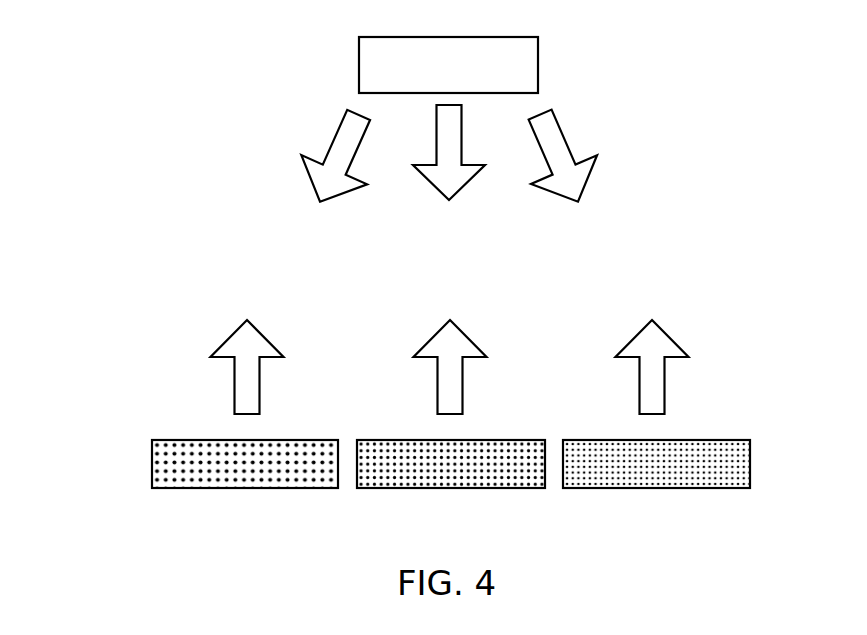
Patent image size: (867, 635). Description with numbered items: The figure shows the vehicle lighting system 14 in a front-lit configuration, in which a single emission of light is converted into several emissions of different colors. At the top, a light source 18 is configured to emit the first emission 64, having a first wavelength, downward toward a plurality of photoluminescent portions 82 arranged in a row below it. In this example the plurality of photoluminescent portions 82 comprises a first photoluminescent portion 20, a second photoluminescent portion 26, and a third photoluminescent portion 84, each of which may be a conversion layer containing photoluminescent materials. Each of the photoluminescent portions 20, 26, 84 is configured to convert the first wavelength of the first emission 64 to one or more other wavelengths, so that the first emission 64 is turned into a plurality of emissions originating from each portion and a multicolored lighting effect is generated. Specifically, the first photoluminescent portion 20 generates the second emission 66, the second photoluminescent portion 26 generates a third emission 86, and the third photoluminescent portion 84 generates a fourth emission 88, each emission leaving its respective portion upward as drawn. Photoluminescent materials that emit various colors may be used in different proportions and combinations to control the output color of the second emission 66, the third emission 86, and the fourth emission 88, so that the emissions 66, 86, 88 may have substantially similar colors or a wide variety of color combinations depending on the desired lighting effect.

The lighting system 14 is at (121, 58).
The light source 18 is at (463, 72).
The first emission 64 is at (358, 143).
The second emission 66 is at (230, 342).
The third emission 86 is at (438, 340).
The fourth emission 88 is at (640, 338).
The first photoluminescent portion 20 is at (175, 443).
The second photoluminescent portion 26 is at (413, 445).
The third photoluminescent portion 84 is at (612, 444).
The plurality of photoluminescent portions 82 is at (613, 470).